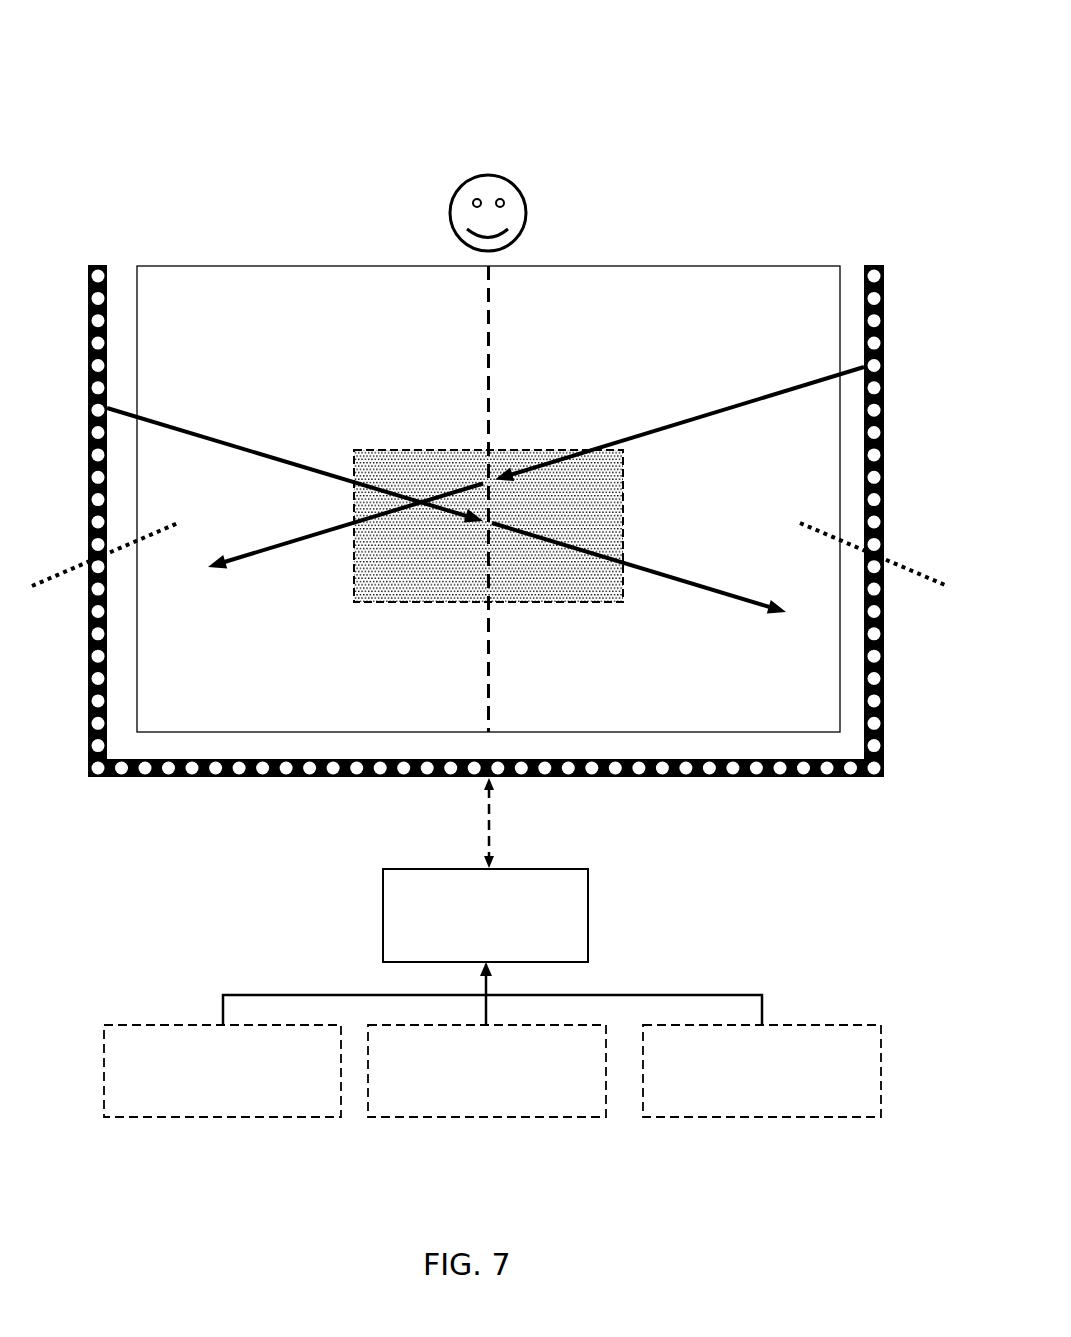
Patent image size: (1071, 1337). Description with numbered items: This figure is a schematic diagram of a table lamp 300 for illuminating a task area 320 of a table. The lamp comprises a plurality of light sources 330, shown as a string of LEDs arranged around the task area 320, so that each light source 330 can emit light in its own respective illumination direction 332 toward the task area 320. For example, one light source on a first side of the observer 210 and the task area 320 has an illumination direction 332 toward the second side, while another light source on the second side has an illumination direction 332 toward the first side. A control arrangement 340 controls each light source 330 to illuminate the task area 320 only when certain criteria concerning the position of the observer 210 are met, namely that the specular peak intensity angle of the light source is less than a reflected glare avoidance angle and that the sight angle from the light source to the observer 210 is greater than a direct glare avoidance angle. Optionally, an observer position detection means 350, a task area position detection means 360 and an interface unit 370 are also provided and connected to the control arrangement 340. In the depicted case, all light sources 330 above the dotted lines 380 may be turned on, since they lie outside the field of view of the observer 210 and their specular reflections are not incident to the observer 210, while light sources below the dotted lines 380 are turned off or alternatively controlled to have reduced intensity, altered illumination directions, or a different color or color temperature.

The table lamp 300 is at (792, 86).
The observer 210 is at (442, 200).
The light sources 330 is at (105, 266).
The illumination direction 332 is at (688, 419).
The task area 320 is at (543, 587).
The dotted lines 380 is at (150, 537).
The control arrangement 340 is at (382, 910).
The observer position detection means 350 is at (157, 1025).
The task area position detection means 360 is at (367, 1028).
The interface unit 370 is at (842, 1023).